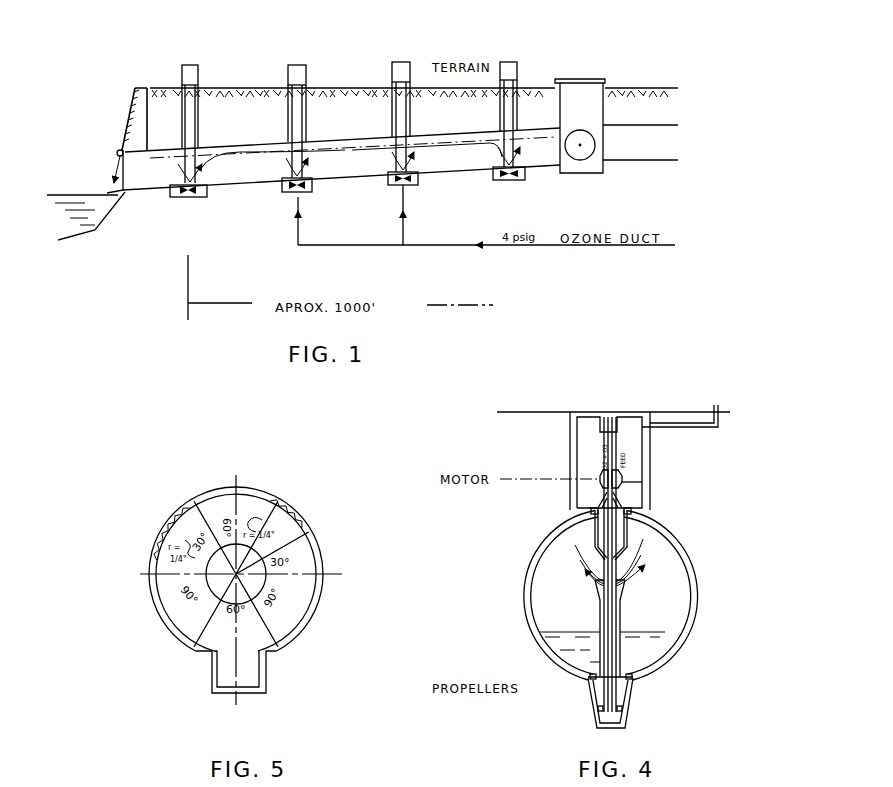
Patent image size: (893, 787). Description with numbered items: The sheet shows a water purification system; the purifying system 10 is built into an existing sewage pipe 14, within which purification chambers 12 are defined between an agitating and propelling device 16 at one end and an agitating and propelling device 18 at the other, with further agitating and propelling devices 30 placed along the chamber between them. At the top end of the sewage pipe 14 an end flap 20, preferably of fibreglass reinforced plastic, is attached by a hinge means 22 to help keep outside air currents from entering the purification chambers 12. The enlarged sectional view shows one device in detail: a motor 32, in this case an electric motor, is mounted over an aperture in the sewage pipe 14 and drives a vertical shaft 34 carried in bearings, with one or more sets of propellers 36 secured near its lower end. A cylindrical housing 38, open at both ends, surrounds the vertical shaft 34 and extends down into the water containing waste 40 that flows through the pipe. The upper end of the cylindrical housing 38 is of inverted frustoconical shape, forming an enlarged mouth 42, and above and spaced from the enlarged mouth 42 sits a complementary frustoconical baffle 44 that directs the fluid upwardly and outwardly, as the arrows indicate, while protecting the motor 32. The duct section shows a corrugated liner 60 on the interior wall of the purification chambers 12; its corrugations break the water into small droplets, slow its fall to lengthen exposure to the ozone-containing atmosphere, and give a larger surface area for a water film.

In FIG. 1, the purifying system 10 is at (328, 52).
In FIG. 1, the purification chambers 12 is at (358, 120).
In FIG. 5, the purification chambers 12 is at (303, 560).
In FIG. 4, the sewage pipe 14 is at (697, 628).
In FIG. 1, the agitating and propelling device 16 is at (190, 65).
In FIG. 1, the agitating and propelling device 18 is at (510, 62).
In FIG. 1, the end flap 20 is at (104, 186).
In FIG. 1, the hinge means 22 is at (120, 150).
In FIG. 1, the agitating and propelling devices 30 is at (297, 65).
In FIG. 4, the motor 32 is at (603, 487).
In FIG. 4, the vertical shaft 34 is at (606, 529).
In FIG. 4, the propellers 36 is at (607, 708).
In FIG. 4, the cylindrical housing 38 is at (618, 647).
In FIG. 4, the water containing waste 40 is at (583, 630).
In FIG. 4, the enlarged mouth 42 is at (628, 568).
In FIG. 4, the frustoconical baffle 44 is at (600, 560).
In FIG. 5, the corrugated liner 60 is at (293, 520).